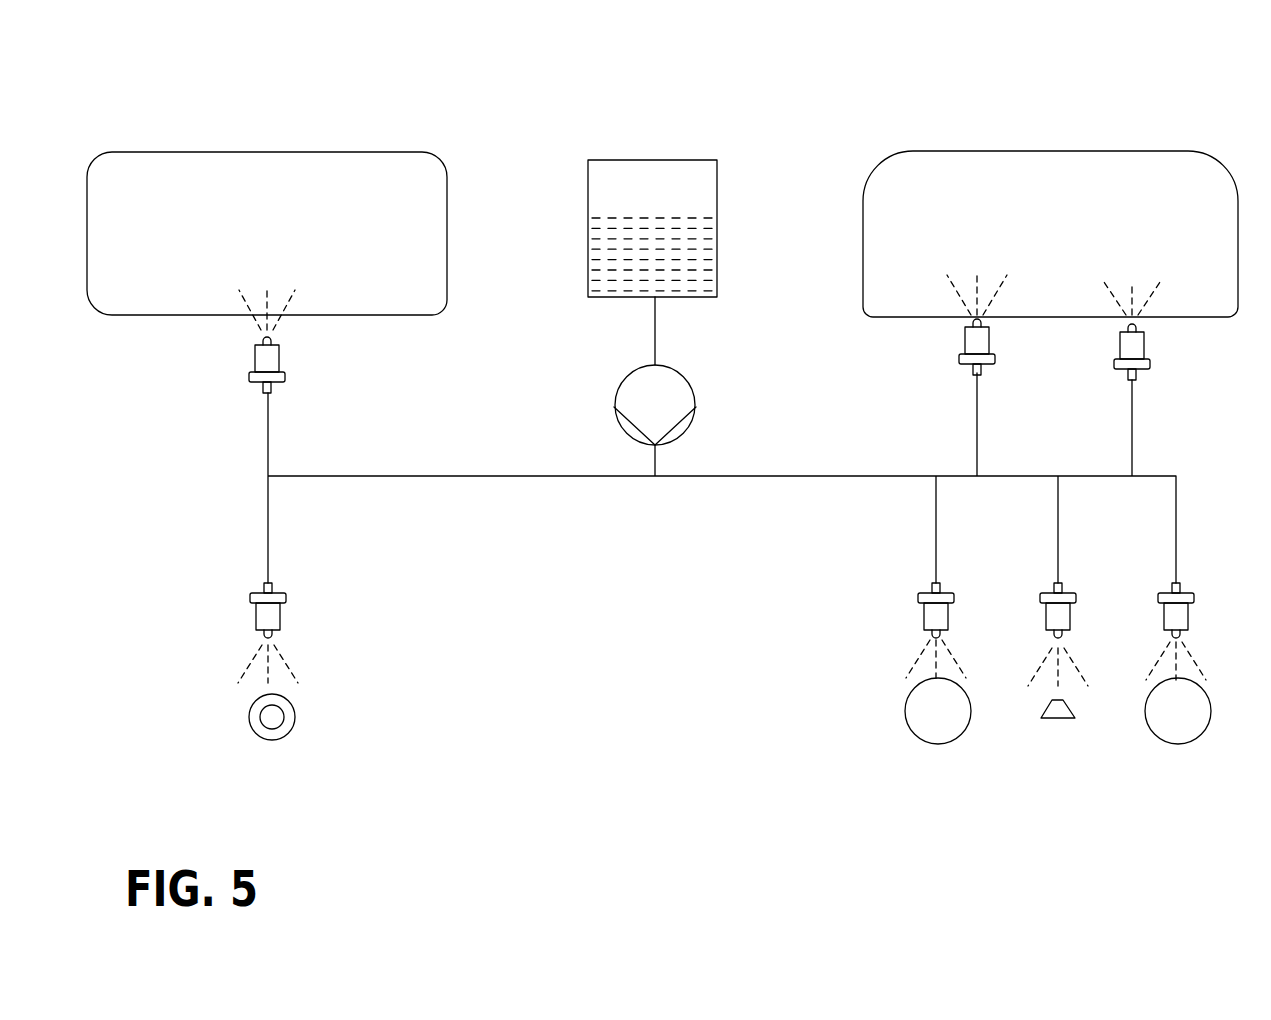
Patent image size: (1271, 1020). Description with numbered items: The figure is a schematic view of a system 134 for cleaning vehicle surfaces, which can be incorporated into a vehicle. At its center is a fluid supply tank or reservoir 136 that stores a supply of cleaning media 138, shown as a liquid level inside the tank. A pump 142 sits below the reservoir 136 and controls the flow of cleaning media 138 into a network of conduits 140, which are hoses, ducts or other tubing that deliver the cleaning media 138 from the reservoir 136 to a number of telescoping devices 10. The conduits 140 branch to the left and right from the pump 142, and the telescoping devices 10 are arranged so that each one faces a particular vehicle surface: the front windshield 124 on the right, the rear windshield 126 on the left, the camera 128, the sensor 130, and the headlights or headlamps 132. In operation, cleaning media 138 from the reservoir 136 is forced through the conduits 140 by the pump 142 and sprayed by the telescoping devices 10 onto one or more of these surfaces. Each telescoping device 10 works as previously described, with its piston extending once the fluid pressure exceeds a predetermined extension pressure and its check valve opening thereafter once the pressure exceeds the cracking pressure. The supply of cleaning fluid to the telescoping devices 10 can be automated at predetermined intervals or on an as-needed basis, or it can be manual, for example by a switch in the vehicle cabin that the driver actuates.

The telescoping device 10 is at (254, 355).
The front windshield 124 is at (1160, 208).
The rear windshield 126 is at (147, 265).
The camera 128 is at (262, 737).
The sensor 130 is at (1058, 720).
The headlights or headlamps 132 is at (908, 720).
The system 134 is at (155, 64).
The fluid supply tank or reservoir 136 is at (588, 180).
The cleaning media 138 is at (677, 248).
The conduit 140 is at (655, 329).
The pump 142 is at (685, 377).